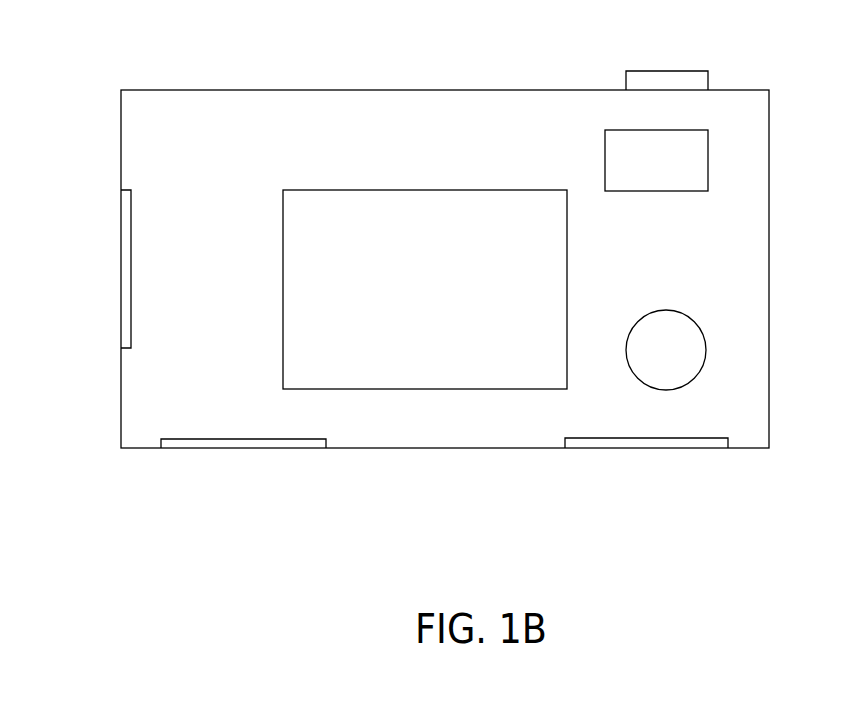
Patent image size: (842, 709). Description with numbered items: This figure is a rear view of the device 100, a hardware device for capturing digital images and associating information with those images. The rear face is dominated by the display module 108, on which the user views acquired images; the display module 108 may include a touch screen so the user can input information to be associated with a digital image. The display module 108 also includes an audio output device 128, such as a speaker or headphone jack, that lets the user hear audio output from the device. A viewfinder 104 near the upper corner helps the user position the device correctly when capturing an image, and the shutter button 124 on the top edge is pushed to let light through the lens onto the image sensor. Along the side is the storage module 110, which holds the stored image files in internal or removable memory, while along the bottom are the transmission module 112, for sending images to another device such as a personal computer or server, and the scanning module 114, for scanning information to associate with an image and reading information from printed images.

The device 100 is at (366, 91).
The viewfinder 104 is at (613, 191).
The display module 108 is at (325, 190).
The storage module 110 is at (121, 249).
The transmission module 112 is at (180, 448).
The scanning module 114 is at (603, 448).
The shutter button 124 is at (708, 80).
The audio output device 128 is at (665, 310).